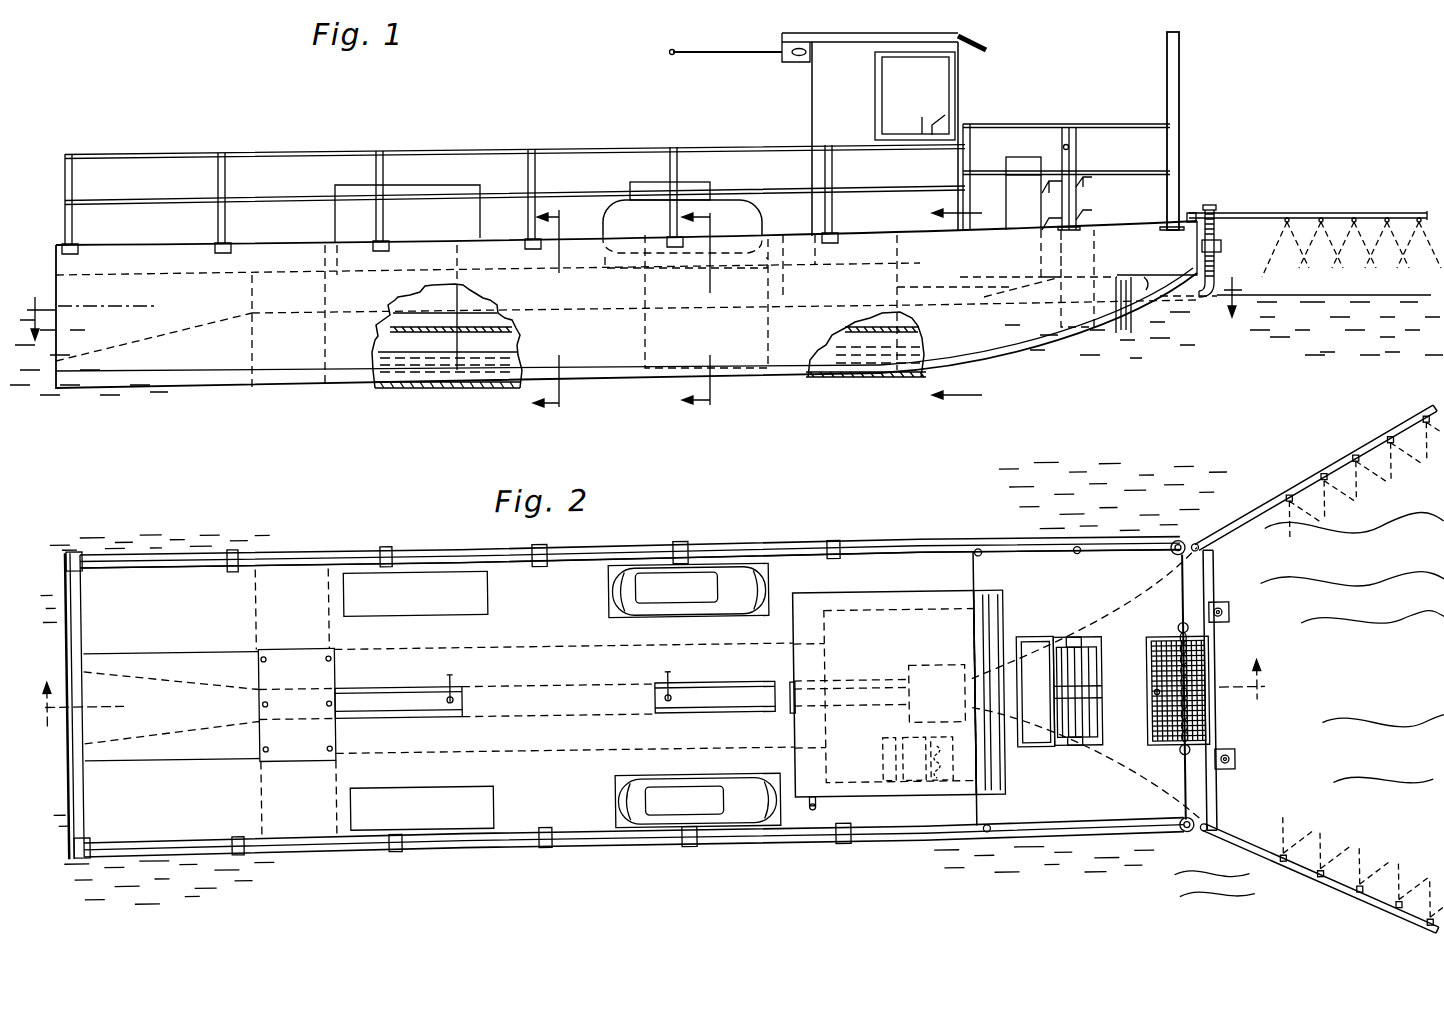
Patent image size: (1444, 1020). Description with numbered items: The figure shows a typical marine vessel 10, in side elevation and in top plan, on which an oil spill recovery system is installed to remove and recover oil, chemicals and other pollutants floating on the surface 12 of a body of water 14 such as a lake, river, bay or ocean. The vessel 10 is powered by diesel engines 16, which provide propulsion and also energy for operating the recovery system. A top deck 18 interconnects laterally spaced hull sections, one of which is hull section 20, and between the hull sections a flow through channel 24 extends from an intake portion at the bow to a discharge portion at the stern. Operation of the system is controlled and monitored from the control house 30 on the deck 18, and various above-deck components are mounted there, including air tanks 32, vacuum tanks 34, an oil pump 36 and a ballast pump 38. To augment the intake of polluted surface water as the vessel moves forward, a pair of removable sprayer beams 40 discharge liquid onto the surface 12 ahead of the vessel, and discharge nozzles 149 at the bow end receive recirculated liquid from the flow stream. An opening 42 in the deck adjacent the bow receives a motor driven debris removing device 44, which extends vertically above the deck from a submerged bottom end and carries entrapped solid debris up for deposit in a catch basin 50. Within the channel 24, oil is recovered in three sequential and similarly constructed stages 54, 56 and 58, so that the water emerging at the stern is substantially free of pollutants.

In FIG. 1, the marine vessel 10 is at (726, 238).
In FIG. 2, the marine vessel 10 is at (738, 679).
In FIG. 1, the surface 12 is at (1302, 295).
In FIG. 1, the body of water 14 is at (1302, 363).
In FIG. 1, the diesel engines 16 is at (252, 347).
In FIG. 2, the diesel engines 16 is at (260, 815).
In FIG. 1, the top deck 18 is at (273, 242).
In FIG. 2, the top deck 18 is at (1013, 583).
In FIG. 1, the hull section 20 is at (1024, 348).
In FIG. 1, the flow through channel 24 is at (492, 340).
In FIG. 1, the control house 30 is at (975, 68).
In FIG. 2, the control house 30 is at (868, 603).
In FIG. 1, the air tanks 32 is at (753, 200).
In FIG. 2, the air tanks 32 is at (740, 582).
In FIG. 1, the vacuum tanks 34 is at (643, 182).
In FIG. 2, the vacuum tanks 34 is at (692, 594).
In FIG. 1, the oil pump 36 is at (420, 185).
In FIG. 2, the oil pump 36 is at (467, 807).
In FIG. 2, the ballast pump 38 is at (358, 581).
In FIG. 1, the sprayer beams 40 is at (1344, 217).
In FIG. 2, the sprayer beams 40 is at (1317, 492).
In FIG. 2, the opening 42 is at (1058, 651).
In FIG. 1, the debris removing device 44 is at (1085, 196).
In FIG. 2, the debris removing device 44 is at (1092, 761).
In FIG. 1, the catch basin 50 is at (1024, 158).
In FIG. 2, the catch basin 50 is at (1035, 740).
In FIG. 1, the first oil recovery stage 54 is at (888, 370).
In FIG. 1, the second oil recovery stage 56 is at (640, 348).
In FIG. 2, the second oil recovery stage 56 is at (704, 687).
In FIG. 1, the third oil recovery stage 58 is at (418, 378).
In FIG. 2, the third oil recovery stage 58 is at (423, 690).
In FIG. 1, the discharge nozzles 149 is at (1214, 298).